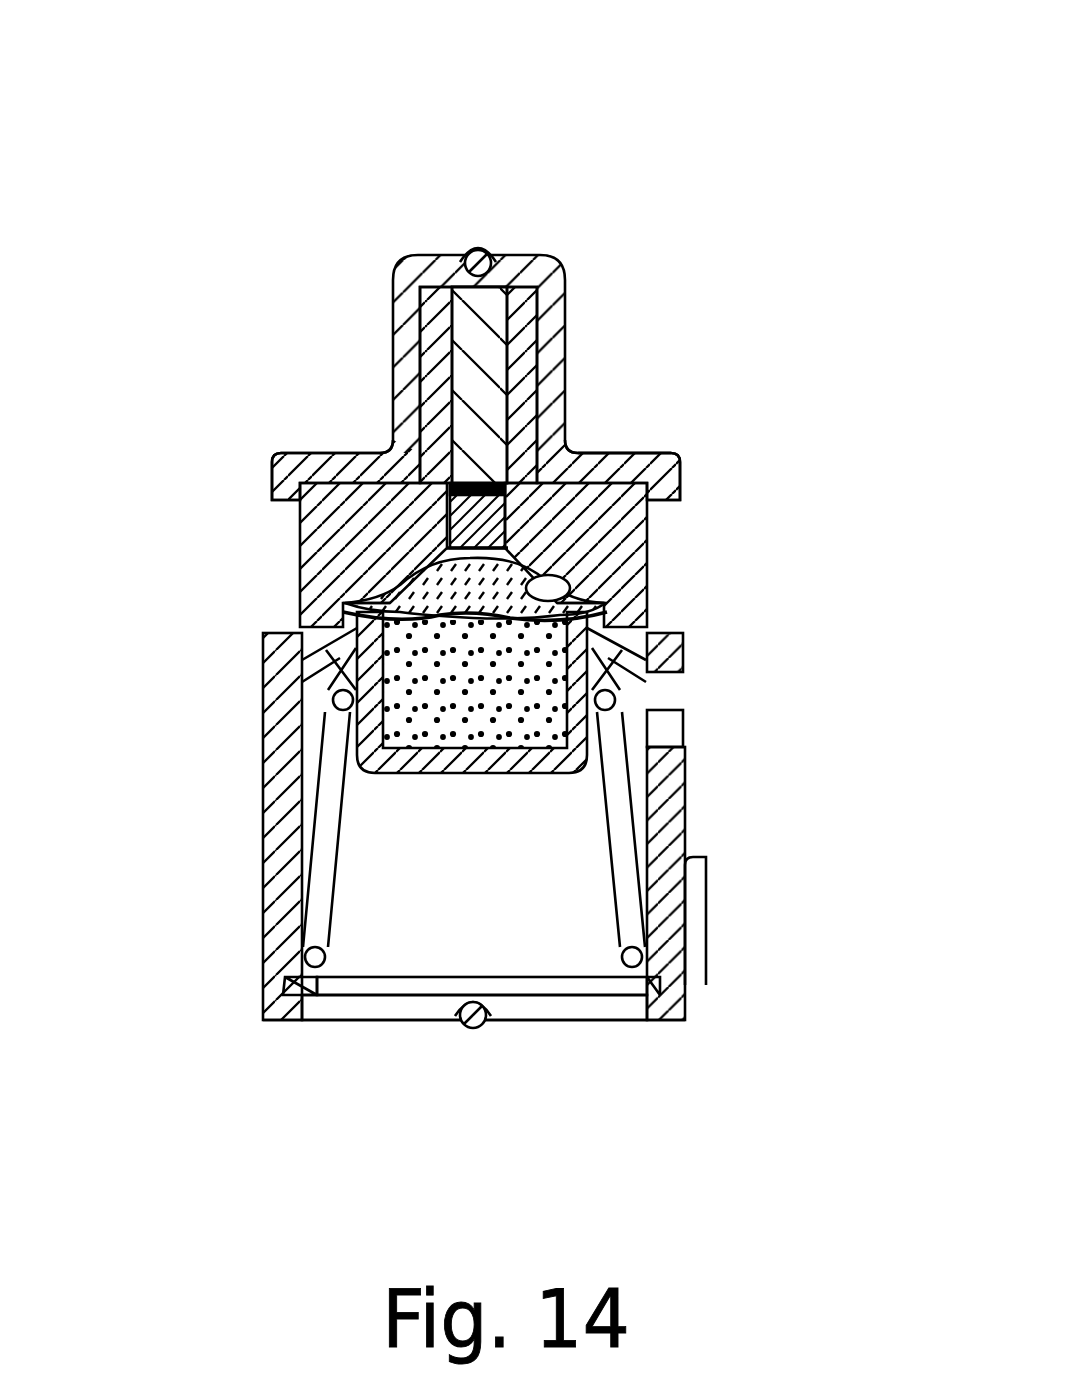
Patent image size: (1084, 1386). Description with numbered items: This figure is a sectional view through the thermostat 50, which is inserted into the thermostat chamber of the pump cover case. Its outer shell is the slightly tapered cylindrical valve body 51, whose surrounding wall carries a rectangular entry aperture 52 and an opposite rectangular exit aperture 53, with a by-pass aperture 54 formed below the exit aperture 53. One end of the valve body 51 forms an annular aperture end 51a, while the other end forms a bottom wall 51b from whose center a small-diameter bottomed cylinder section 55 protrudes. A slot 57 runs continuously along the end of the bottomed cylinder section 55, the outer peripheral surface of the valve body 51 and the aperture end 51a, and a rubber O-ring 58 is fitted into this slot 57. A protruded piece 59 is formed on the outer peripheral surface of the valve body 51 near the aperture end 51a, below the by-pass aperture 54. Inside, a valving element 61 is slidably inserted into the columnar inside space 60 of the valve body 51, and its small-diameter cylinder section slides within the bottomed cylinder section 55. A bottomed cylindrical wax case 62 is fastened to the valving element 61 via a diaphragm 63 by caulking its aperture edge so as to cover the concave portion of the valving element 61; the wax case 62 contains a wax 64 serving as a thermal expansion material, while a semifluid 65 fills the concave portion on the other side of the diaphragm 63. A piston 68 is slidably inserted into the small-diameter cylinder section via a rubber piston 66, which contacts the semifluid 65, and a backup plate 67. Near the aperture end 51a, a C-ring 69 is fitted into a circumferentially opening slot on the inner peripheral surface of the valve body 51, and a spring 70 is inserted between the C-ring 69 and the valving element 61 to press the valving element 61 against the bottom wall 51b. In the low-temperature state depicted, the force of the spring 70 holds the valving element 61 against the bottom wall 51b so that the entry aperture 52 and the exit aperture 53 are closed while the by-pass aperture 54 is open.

The thermostat 50 is at (296, 193).
The valve body 51 is at (489, 905).
The aperture end 51a is at (263, 1022).
The bottom wall 51b is at (333, 453).
The entry aperture 52 is at (272, 561).
The exit aperture 53 is at (674, 552).
The by-pass aperture 54 is at (688, 698).
The bottomed cylinder section 55 is at (393, 345).
The slot 57 is at (497, 231).
The rubber O-ring 58 is at (475, 250).
The protruded piece 59 is at (707, 915).
The inside space 60 is at (474, 844).
The valving element 61 is at (485, 528).
The wax case 62 is at (420, 775).
The diaphragm 63 is at (337, 668).
The wax 64 is at (497, 718).
The semifluid 65 is at (648, 527).
The rubber piston 66 is at (640, 447).
The backup plate 67 is at (560, 440).
The piston 68 is at (478, 382).
The C-ring 69 is at (557, 1000).
The spring 70 is at (620, 870).